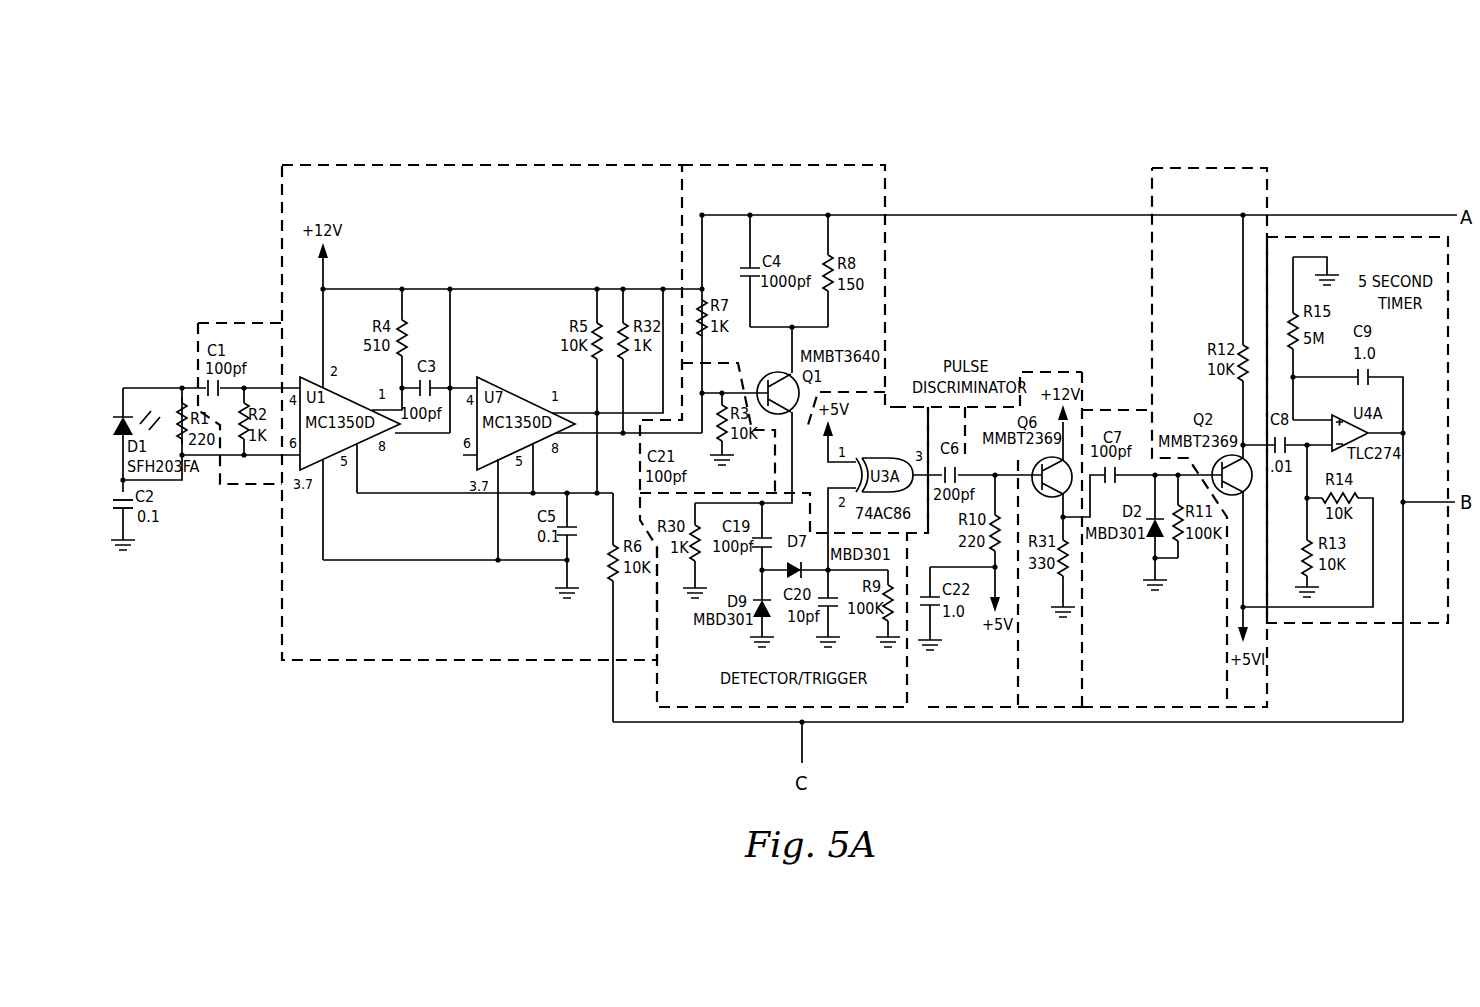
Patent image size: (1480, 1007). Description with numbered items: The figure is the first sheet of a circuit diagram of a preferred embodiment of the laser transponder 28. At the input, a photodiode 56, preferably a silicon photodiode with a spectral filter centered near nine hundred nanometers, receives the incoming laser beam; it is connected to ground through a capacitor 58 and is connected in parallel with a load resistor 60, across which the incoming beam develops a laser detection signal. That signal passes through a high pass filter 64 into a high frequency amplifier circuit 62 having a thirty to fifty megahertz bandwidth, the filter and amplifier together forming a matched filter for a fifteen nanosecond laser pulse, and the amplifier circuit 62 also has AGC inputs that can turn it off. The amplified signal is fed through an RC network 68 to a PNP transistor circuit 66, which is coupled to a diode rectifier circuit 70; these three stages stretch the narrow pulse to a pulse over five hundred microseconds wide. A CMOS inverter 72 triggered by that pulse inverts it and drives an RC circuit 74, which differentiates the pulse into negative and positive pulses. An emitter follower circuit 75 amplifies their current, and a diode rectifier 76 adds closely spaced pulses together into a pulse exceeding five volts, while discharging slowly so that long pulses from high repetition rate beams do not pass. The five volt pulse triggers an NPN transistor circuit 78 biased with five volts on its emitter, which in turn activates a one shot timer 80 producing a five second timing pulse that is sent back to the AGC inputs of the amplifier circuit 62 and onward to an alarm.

The laser transponder 28 is at (1123, 100).
The photodiode 56 is at (123, 384).
The capacitor 58 is at (133, 516).
The load resistor 60 is at (182, 384).
The high frequency amplifier circuit 62 is at (422, 181).
The high pass filter 64 is at (243, 330).
The PNP transistor circuit 66 is at (758, 180).
The RC network 68 is at (727, 358).
The diode rectifier circuit 70 is at (690, 690).
The CMOS inverter 72 is at (897, 397).
The RC circuit 74 is at (960, 707).
The emitter follower circuit 75 is at (1042, 365).
The diode rectifier 76 is at (1133, 707).
The NPN transistor circuit 78 is at (1255, 190).
The one shot timer 80 is at (1390, 245).